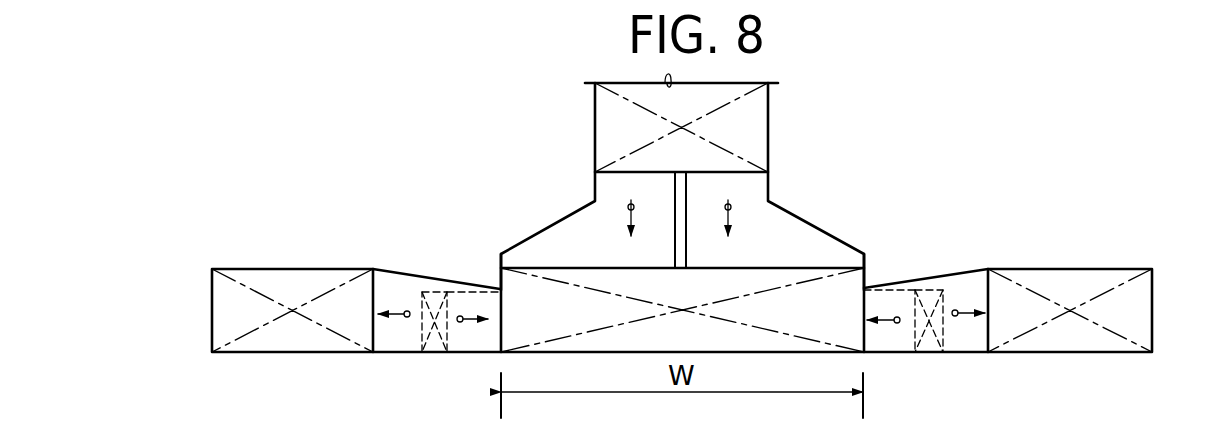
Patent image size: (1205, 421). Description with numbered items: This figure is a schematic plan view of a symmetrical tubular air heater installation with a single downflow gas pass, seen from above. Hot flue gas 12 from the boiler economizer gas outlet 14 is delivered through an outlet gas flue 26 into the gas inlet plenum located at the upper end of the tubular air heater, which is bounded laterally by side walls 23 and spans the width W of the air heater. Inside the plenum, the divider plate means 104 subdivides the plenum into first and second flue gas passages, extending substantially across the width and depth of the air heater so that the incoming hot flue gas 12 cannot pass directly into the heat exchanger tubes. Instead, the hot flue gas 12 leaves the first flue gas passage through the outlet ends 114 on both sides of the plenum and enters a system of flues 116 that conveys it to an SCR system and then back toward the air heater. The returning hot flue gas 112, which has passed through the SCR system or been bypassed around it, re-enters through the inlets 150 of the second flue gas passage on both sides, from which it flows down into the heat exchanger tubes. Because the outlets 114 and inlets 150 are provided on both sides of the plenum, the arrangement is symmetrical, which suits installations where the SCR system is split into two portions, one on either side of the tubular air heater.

The hot flue gas 12 is at (634, 205).
The economizer gas outlet 14 is at (757, 126).
The side walls 23 is at (499, 288).
The outlet gas flue 26 is at (562, 227).
The divider plate means 104 is at (695, 299).
The hot flue gas returning from the SCR system 112 is at (405, 318).
The outlet end of the first flue gas passage 114 is at (503, 307).
The system of flues 116 is at (428, 253).
The inlet of the second flue gas passage 150 is at (862, 307).